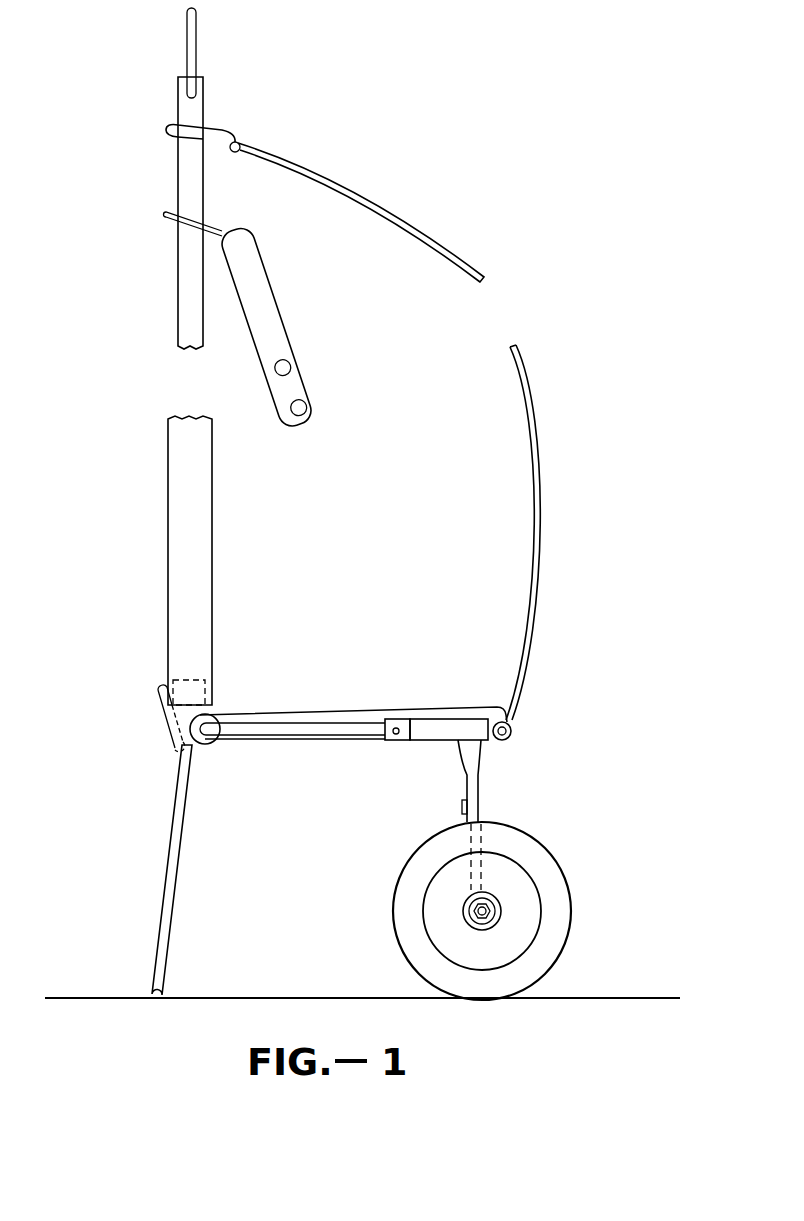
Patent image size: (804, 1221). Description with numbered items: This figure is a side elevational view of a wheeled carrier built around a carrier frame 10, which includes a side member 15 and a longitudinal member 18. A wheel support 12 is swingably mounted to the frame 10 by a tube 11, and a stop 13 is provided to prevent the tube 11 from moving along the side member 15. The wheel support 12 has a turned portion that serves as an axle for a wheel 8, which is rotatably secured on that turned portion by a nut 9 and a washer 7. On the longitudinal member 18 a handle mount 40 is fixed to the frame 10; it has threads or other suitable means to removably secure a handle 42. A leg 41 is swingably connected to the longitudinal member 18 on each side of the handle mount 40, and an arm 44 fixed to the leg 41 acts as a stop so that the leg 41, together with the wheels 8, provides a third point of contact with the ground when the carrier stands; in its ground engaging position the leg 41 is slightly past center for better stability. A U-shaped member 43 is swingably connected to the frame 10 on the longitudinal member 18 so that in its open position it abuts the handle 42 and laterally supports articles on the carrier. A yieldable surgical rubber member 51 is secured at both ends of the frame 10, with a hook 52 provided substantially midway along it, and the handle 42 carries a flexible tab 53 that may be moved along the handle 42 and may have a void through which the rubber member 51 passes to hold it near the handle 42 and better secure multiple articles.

The leg 41 is at (197, 32).
The handle 42 is at (195, 157).
The hook 52 is at (227, 128).
The yieldable surgical rubber member 51 is at (280, 153).
The flexible tab 53 is at (267, 263).
The handle mount 40 is at (196, 679).
The arm 44 is at (158, 690).
The longitudinal member 18 is at (172, 753).
The U-shaped member 43 is at (353, 688).
The carrier frame 10 is at (337, 752).
The side member 15 is at (263, 730).
The stop 13 is at (398, 741).
The tube 11 is at (428, 733).
The wheel support 12 is at (473, 778).
The wheel 8 is at (537, 838).
The washer 7 is at (500, 906).
The nut 9 is at (495, 918).